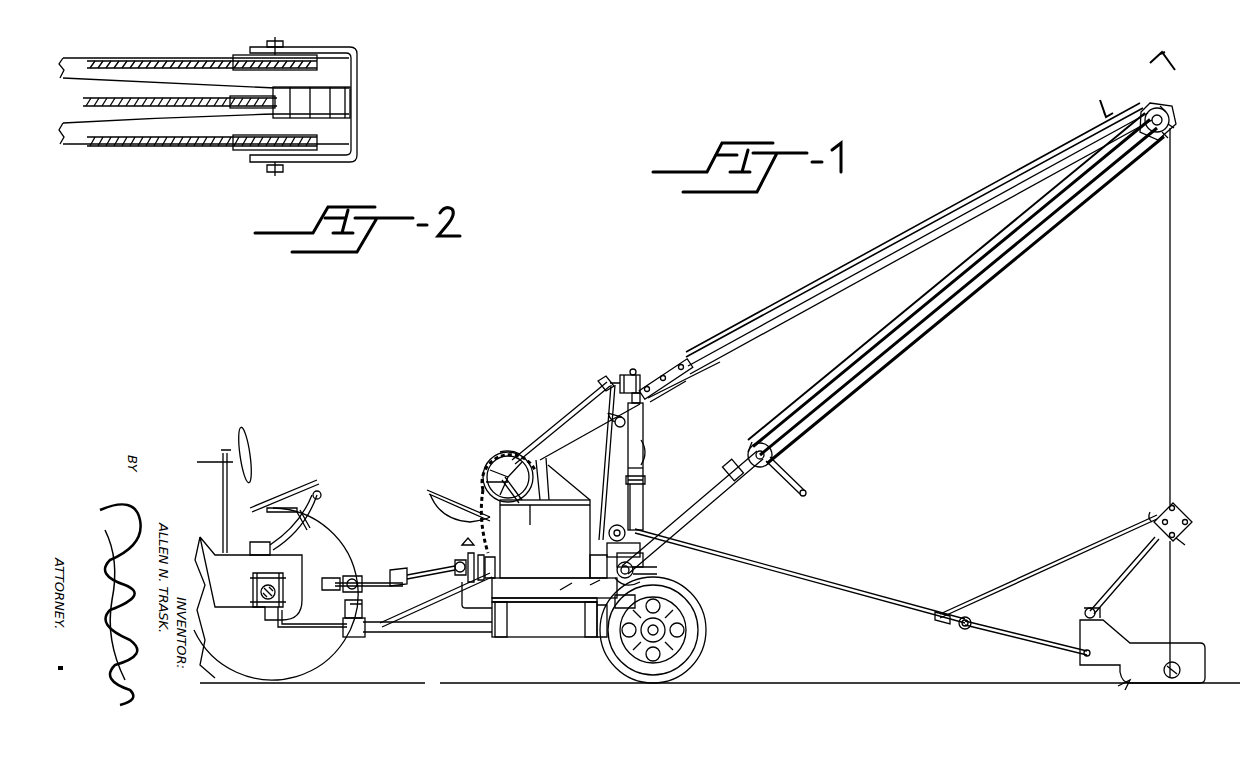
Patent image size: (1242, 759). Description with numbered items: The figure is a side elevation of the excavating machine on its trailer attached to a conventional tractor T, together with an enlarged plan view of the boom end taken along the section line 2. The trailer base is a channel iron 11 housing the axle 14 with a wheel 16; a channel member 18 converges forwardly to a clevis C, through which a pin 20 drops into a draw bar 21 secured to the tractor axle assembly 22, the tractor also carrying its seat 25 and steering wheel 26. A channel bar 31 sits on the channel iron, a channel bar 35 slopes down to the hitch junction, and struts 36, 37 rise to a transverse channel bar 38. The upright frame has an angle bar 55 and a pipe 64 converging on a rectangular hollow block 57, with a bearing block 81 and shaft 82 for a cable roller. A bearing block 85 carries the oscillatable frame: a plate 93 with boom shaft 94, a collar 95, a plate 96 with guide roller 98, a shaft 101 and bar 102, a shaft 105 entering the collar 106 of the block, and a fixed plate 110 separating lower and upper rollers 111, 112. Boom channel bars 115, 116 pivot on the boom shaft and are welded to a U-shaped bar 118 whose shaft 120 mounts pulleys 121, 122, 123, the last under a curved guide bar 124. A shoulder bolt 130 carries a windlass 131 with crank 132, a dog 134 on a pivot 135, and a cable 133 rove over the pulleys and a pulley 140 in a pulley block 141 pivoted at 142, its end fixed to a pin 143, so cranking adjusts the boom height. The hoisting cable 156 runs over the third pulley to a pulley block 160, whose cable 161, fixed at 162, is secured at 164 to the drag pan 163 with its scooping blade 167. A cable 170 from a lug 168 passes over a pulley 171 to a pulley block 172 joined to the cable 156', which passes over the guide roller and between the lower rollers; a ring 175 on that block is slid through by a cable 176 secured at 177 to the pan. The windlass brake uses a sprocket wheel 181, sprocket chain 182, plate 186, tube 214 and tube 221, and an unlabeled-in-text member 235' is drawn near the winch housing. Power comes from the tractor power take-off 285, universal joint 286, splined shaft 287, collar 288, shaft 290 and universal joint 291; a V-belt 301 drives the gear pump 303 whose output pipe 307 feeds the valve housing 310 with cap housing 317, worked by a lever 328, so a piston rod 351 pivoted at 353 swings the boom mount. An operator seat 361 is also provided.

In FIG. 1, the section line 2 is at (1129, 75).
In FIG. 1, the channel iron 11 is at (494, 637).
In FIG. 1, the axle 14 is at (656, 628).
In FIG. 1, the wheel 16 is at (706, 616).
In FIG. 1, the channel member 18 is at (437, 632).
In FIG. 1, the pin 20 is at (352, 604).
In FIG. 1, the draw bar 21 is at (300, 627).
In FIG. 1, the axle assembly 22 is at (258, 584).
In FIG. 1, the seat 25 is at (303, 484).
In FIG. 1, the steering wheel 26 is at (250, 436).
In FIG. 1, the channel bar 31 is at (505, 605).
In FIG. 1, the channel bar 35 is at (430, 605).
In FIG. 1, the strut 36 is at (508, 615).
In FIG. 1, the strut 37 is at (587, 626).
In FIG. 1, the transverse channel bar 38 is at (585, 603).
In FIG. 1, the angle bar 55 is at (567, 412).
In FIG. 1, the rectangular hollow block 57 is at (606, 378).
In FIG. 1, the pipe 64 is at (606, 458).
In FIG. 1, the bearing block 81 is at (614, 424).
In FIG. 1, the shaft 82 is at (610, 414).
In FIG. 1, the bearing block 85 is at (616, 604).
In FIG. 1, the plate 93 is at (657, 570).
In FIG. 1, the shaft 94 is at (632, 585).
In FIG. 1, the collar 95 is at (623, 560).
In FIG. 1, the plate 96 is at (607, 550).
In FIG. 1, the roller 98 is at (608, 536).
In FIG. 1, the shaft 101 is at (645, 446).
In FIG. 1, the bar 102 is at (643, 405).
In FIG. 1, the shaft 105 is at (655, 398).
In FIG. 1, the collar 106 is at (632, 374).
In FIG. 1, the fixed plate 110 is at (645, 482).
In FIG. 1, the lower roller 111 is at (644, 498).
In FIG. 1, the upper roller 112 is at (645, 471).
In FIG. 2, the channel bar 115 is at (72, 144).
In FIG. 1, the channel bar 115 is at (710, 502).
In FIG. 2, the channel bar 116 is at (71, 60).
In FIG. 1, the channel bar 116 is at (914, 230).
In FIG. 2, the U-shaped bar 118 is at (358, 92).
In FIG. 1, the U-shaped bar 118 is at (1172, 108).
In FIG. 2, the shaft 120 is at (278, 37).
In FIG. 1, the shaft 120 is at (1150, 110).
In FIG. 2, the pulley 121 is at (241, 55).
In FIG. 2, the pulley 122 is at (238, 150).
In FIG. 1, the pulley 122 is at (1172, 128).
In FIG. 2, the pulley 123 is at (233, 110).
In FIG. 1, the pulley 123 is at (1174, 121).
In FIG. 2, the curved guide bar 124 is at (285, 118).
In FIG. 1, the curved guide bar 124 is at (1168, 104).
In FIG. 1, the shoulder bolt 130 is at (761, 443).
In FIG. 1, the windlass 131 is at (774, 460).
In FIG. 1, the crank 132 is at (805, 490).
In FIG. 2, the cable 133 is at (183, 60).
In FIG. 1, the cable 133 is at (912, 230).
In FIG. 1, the dog 134 is at (748, 452).
In FIG. 1, the pivot 135 is at (731, 464).
In FIG. 1, the pulley 140 is at (658, 372).
In FIG. 1, the pulley block 141 is at (683, 392).
In FIG. 1, the pivot 142 is at (645, 375).
In FIG. 1, the pin 143 is at (684, 362).
In FIG. 2, the cable 156 is at (169, 109).
In FIG. 1, the cable 156 is at (873, 312).
In FIG. 1, the cable 156' is at (800, 576).
In FIG. 1, the pulley block 160 is at (1186, 512).
In FIG. 1, the cable 161 is at (1172, 580).
In FIG. 1, the securing point 162 is at (1180, 542).
In FIG. 1, the drag pan 163 is at (1147, 645).
In FIG. 1, the securing point 164 is at (1180, 668).
In FIG. 1, the scooping blade 167 is at (1124, 689).
In FIG. 1, the lug 168 is at (1100, 612).
In FIG. 1, the cable 170 is at (1045, 566).
In FIG. 1, the pulley 171 is at (1152, 512).
In FIG. 1, the pulley block 172 is at (943, 613).
In FIG. 1, the ring 175 is at (968, 632).
In FIG. 1, the cable 176 is at (1033, 648).
In FIG. 1, the securing point 177 is at (1089, 650).
In FIG. 1, the sprocket wheel 181 is at (493, 460).
In FIG. 1, the sprocket chain 182 is at (511, 450).
In FIG. 1, the plate 186 is at (488, 465).
In FIG. 1, the tube 214 is at (486, 482).
In FIG. 1, the tube 221 is at (530, 505).
In FIG. 1, the drum support post 235' is at (563, 489).
In FIG. 1, the power take-off means 285 is at (333, 578).
In FIG. 1, the universal joint 286 is at (355, 578).
In FIG. 1, the splined shaft 287 is at (358, 576).
In FIG. 1, the splined collar 288 is at (402, 570).
In FIG. 1, the shaft 290 is at (431, 579).
In FIG. 1, the universal joint 291 is at (458, 562).
In FIG. 1, the V-belt 301 is at (488, 560).
In FIG. 1, the fluid gear pump 303 is at (496, 568).
In FIG. 1, the output pipe 307 is at (554, 588).
In FIG. 1, the valve housing 310 is at (468, 556).
In FIG. 1, the valve cap housing 317 is at (467, 538).
In FIG. 1, the lever 328 is at (535, 505).
In FIG. 1, the piston rod 351 is at (590, 566).
In FIG. 1, the pivot connection 353 is at (580, 588).
In FIG. 1, the seat 361 is at (427, 493).
In FIG. 1, the tractor T is at (228, 607).
In FIG. 1, the clevis C is at (358, 637).